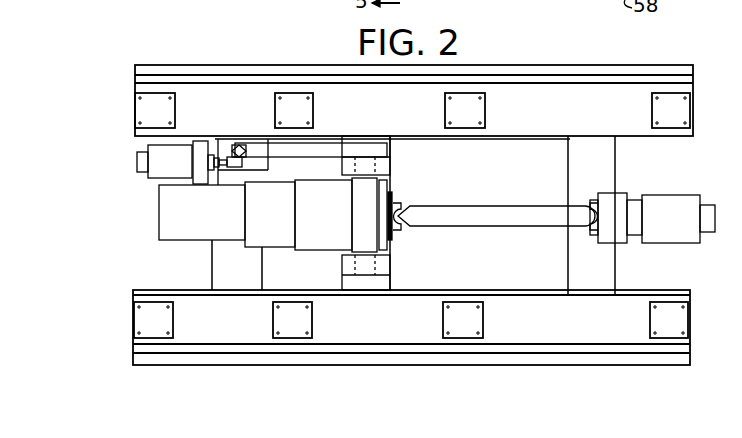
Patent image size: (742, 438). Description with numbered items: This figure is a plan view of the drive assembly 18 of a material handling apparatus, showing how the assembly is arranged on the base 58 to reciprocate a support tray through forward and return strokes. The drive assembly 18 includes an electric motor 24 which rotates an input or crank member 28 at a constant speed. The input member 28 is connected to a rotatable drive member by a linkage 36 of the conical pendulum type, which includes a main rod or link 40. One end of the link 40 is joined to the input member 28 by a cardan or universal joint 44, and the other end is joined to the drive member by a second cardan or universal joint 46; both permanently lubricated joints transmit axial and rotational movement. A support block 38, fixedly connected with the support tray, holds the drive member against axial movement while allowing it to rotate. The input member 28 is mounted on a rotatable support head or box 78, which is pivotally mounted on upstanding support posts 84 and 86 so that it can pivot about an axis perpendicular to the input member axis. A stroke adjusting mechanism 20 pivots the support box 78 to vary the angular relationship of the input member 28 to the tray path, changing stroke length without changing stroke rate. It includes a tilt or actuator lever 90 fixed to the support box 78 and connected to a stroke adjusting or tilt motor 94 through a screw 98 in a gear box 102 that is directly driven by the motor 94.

The drive assembly 18 is at (227, 233).
The stroke adjusting mechanism 20 is at (128, 150).
The electric motor 24 is at (200, 243).
The input member 28 is at (393, 200).
The linkage 36 is at (496, 209).
The support block 38 is at (652, 197).
The main rod 40 is at (524, 228).
The universal joint 44 is at (401, 226).
The second universal joint 46 is at (589, 236).
The base 58 is at (610, 66).
The support box 78 is at (388, 247).
The support post 84 is at (350, 268).
The support post 86 is at (403, 137).
The tilt lever 90 is at (270, 150).
The tilt motor 94 is at (160, 157).
The screw 98 is at (243, 136).
The gear box 102 is at (243, 163).